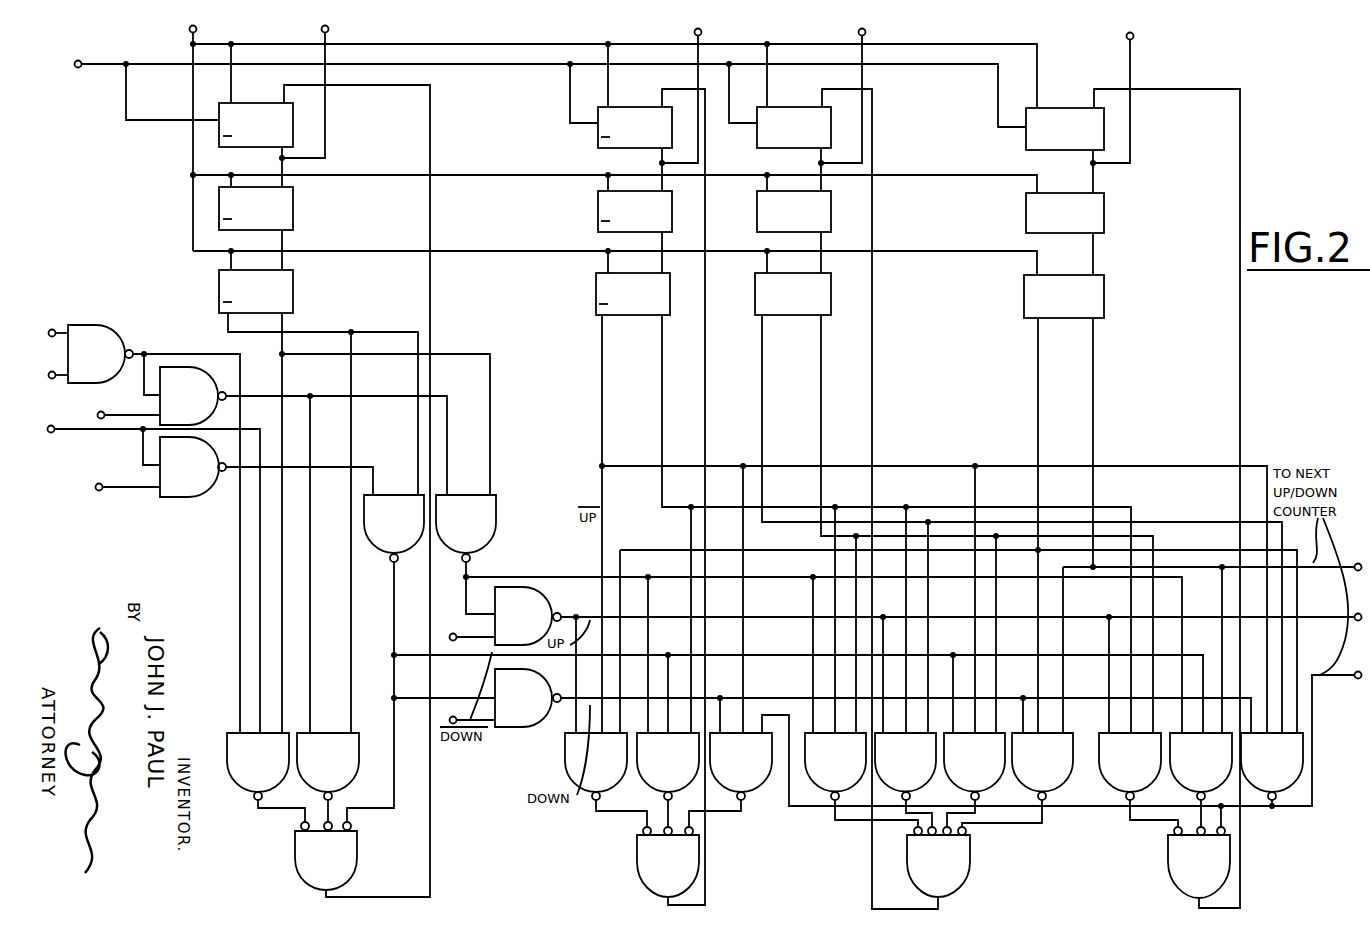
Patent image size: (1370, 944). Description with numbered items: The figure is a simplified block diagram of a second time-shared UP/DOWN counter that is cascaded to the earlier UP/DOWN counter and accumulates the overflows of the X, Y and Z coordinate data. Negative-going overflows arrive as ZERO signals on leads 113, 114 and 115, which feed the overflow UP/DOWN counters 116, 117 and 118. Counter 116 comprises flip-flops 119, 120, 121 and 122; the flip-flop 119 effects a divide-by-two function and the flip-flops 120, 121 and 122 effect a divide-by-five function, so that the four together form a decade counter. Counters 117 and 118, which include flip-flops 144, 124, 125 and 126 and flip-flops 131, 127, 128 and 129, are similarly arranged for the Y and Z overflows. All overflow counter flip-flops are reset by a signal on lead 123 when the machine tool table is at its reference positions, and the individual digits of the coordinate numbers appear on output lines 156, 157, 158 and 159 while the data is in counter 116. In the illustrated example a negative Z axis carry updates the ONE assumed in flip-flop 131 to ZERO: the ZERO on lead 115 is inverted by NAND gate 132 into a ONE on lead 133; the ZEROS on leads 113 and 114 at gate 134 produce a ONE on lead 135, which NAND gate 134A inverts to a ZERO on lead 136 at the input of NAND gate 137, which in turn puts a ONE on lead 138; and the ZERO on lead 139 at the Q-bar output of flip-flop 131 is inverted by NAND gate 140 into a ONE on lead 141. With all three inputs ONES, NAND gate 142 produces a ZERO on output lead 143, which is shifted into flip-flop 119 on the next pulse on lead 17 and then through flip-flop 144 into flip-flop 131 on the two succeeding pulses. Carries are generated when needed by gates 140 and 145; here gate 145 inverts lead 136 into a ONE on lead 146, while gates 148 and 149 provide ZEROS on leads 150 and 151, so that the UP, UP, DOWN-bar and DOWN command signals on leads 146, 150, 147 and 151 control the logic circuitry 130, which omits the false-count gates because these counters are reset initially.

The lead 17 is at (186, 45).
The lead 123 is at (99, 70).
The flip-flop 119 is at (256, 102).
The flip-flop 144 is at (293, 206).
The flip-flop 131 is at (293, 290).
The output line 156 is at (329, 30).
The output line 157 is at (702, 33).
The output line 158 is at (865, 33).
The output line 159 is at (1134, 37).
The output lead 143 is at (410, 90).
The overflow UP/DOWN counter 116 is at (520, 137).
The overflow UP/DOWN counter 117 is at (520, 223).
The overflow UP/DOWN counter 118 is at (520, 302).
The flip-flop 120 is at (596, 140).
The flip-flop 121 is at (756, 136).
The flip-flop 122 is at (1026, 137).
The flip-flop 124 is at (596, 220).
The flip-flop 125 is at (756, 212).
The flip-flop 126 is at (1026, 207).
The flip-flop 127 is at (596, 298).
The flip-flop 128 is at (756, 296).
The flip-flop 129 is at (1024, 285).
The lead 113 is at (53, 330).
The lead 114 is at (50, 378).
The lead 115 is at (100, 432).
The gate 134 is at (110, 327).
The NAND gate 134A is at (196, 358).
The lead 135 is at (236, 530).
The lead 136 is at (292, 395).
The lead 139 is at (376, 332).
The NAND gate 140 is at (388, 494).
The gate 145 is at (496, 503).
The lead 146 is at (594, 576).
The gate 148 is at (510, 586).
The lead 150 is at (575, 614).
The lead 147 is at (458, 656).
The lead 151 is at (560, 705).
The gate 149 is at (514, 727).
The NAND gate 132 is at (224, 788).
The lead 138 is at (318, 810).
The lead 133 is at (283, 812).
The NAND gate 137 is at (350, 790).
The lead 141 is at (373, 811).
The NAND gate 142 is at (298, 865).
The logic circuitry 130 is at (1085, 879).